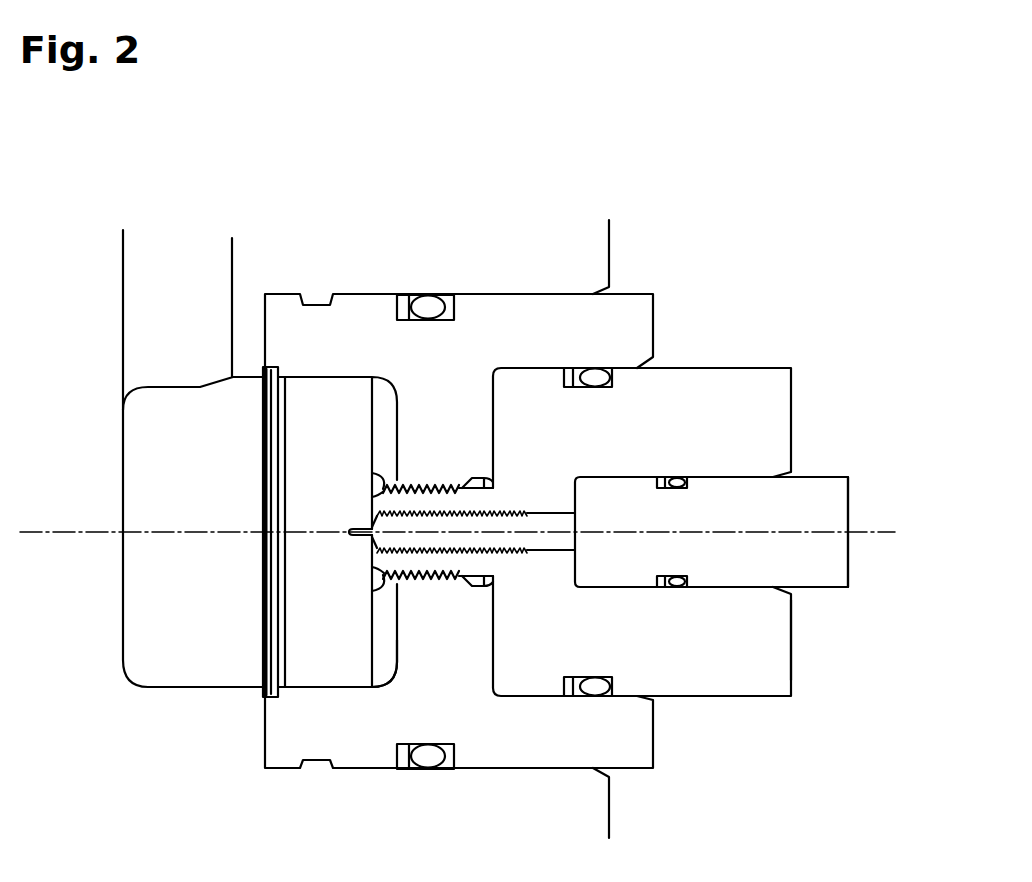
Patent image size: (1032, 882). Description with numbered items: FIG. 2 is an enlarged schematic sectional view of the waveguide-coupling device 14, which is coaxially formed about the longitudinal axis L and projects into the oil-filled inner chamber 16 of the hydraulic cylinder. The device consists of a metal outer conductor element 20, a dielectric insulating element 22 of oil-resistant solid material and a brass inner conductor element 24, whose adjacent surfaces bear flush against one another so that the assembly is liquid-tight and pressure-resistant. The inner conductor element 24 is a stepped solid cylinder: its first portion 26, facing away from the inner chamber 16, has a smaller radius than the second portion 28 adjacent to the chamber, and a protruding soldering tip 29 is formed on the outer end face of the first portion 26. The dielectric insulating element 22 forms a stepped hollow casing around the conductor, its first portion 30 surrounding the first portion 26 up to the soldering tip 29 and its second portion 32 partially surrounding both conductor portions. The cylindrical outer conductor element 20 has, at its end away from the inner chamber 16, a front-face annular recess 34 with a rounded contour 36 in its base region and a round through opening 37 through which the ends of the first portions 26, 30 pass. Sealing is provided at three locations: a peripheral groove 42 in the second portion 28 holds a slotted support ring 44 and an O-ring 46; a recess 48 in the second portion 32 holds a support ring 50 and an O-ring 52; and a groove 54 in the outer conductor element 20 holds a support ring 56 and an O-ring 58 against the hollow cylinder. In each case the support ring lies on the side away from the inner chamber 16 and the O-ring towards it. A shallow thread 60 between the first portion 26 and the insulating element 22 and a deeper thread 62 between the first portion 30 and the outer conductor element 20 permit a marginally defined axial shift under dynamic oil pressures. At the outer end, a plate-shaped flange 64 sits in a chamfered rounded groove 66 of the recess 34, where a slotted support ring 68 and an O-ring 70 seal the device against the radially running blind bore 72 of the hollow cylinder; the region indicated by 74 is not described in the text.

The waveguide-coupling device 14 is at (805, 286).
The inner chamber 16 is at (884, 381).
The outer conductor element 20 is at (657, 765).
The dielectric insulating element 22 is at (797, 684).
The inner conductor element 24 is at (853, 569).
The first portion of the inner conductor element 26 is at (553, 545).
The second portion of the inner conductor element 28 is at (822, 483).
The soldering tip 29 is at (357, 540).
The first portion of the dielectric insulating element 30 is at (429, 503).
The second portion of the dielectric insulating element 32 is at (772, 638).
The annular recess 34 is at (327, 677).
The rounded contour 36 is at (380, 680).
The through opening 37 is at (378, 481).
The recess 42 is at (686, 575).
The support element 44 is at (663, 598).
The sealing element 46 is at (685, 598).
The recess 48 is at (600, 389).
The support element 50 is at (572, 369).
The sealing element 52 is at (593, 369).
The recess 54 is at (448, 321).
The support element 56 is at (407, 297).
The sealing element 58 is at (428, 297).
The thread 60 is at (447, 512).
The thread 62 is at (423, 592).
The flange 64 is at (268, 494).
The recess 66 is at (270, 367).
The support element 68 is at (272, 628).
The sealing element 70 is at (275, 585).
The bore 72 is at (148, 306).
The connection region 74 is at (684, 263).
The longitudinal axis L is at (883, 530).